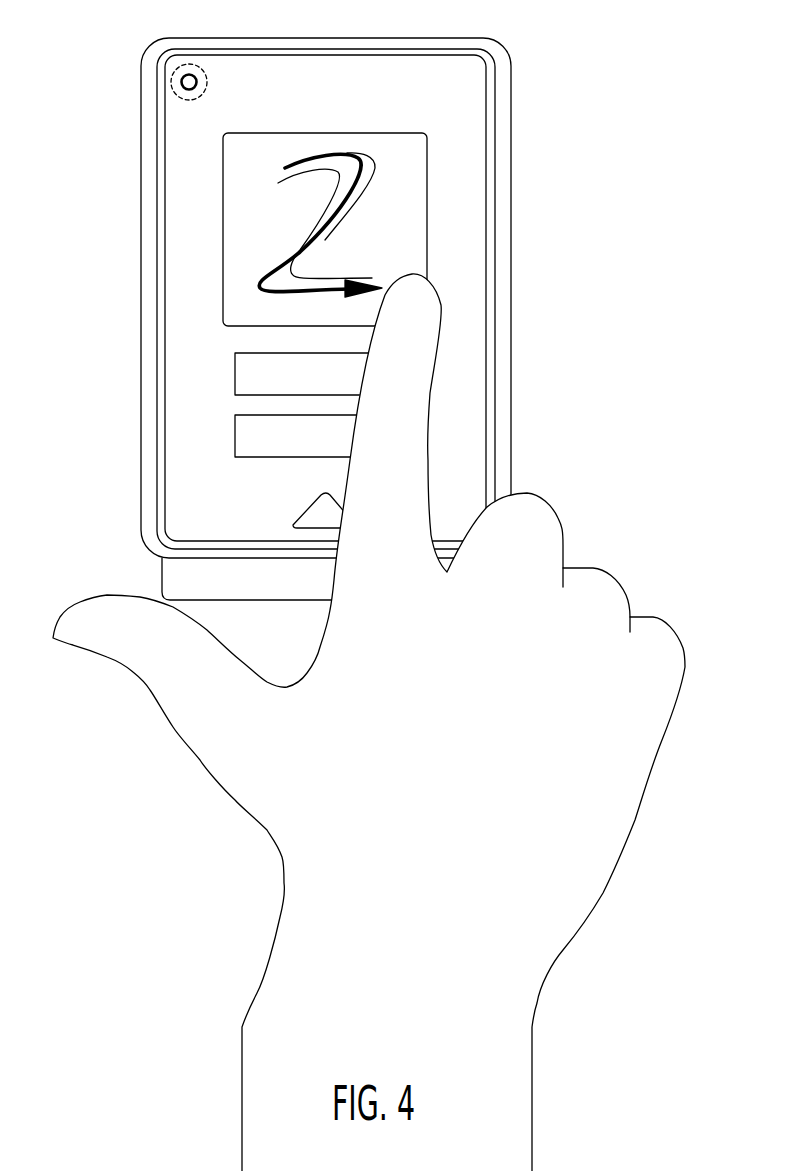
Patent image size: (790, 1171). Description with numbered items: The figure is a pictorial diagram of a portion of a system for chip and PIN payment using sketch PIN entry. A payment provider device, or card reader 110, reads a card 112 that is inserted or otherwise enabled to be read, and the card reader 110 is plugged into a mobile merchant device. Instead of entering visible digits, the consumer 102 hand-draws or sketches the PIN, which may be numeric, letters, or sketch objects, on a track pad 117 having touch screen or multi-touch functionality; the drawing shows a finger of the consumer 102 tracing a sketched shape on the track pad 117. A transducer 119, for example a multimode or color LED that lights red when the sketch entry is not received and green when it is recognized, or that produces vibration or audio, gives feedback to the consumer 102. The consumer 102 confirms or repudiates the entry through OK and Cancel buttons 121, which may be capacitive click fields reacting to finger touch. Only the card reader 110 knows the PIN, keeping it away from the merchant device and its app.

The consumer 102 is at (637, 820).
The payment provider device (card reader) 110 is at (512, 127).
The card 112 is at (162, 570).
The track pad 117 is at (412, 207).
The transducer 119 is at (189, 68).
The OK and Cancel buttons 121 is at (235, 435).